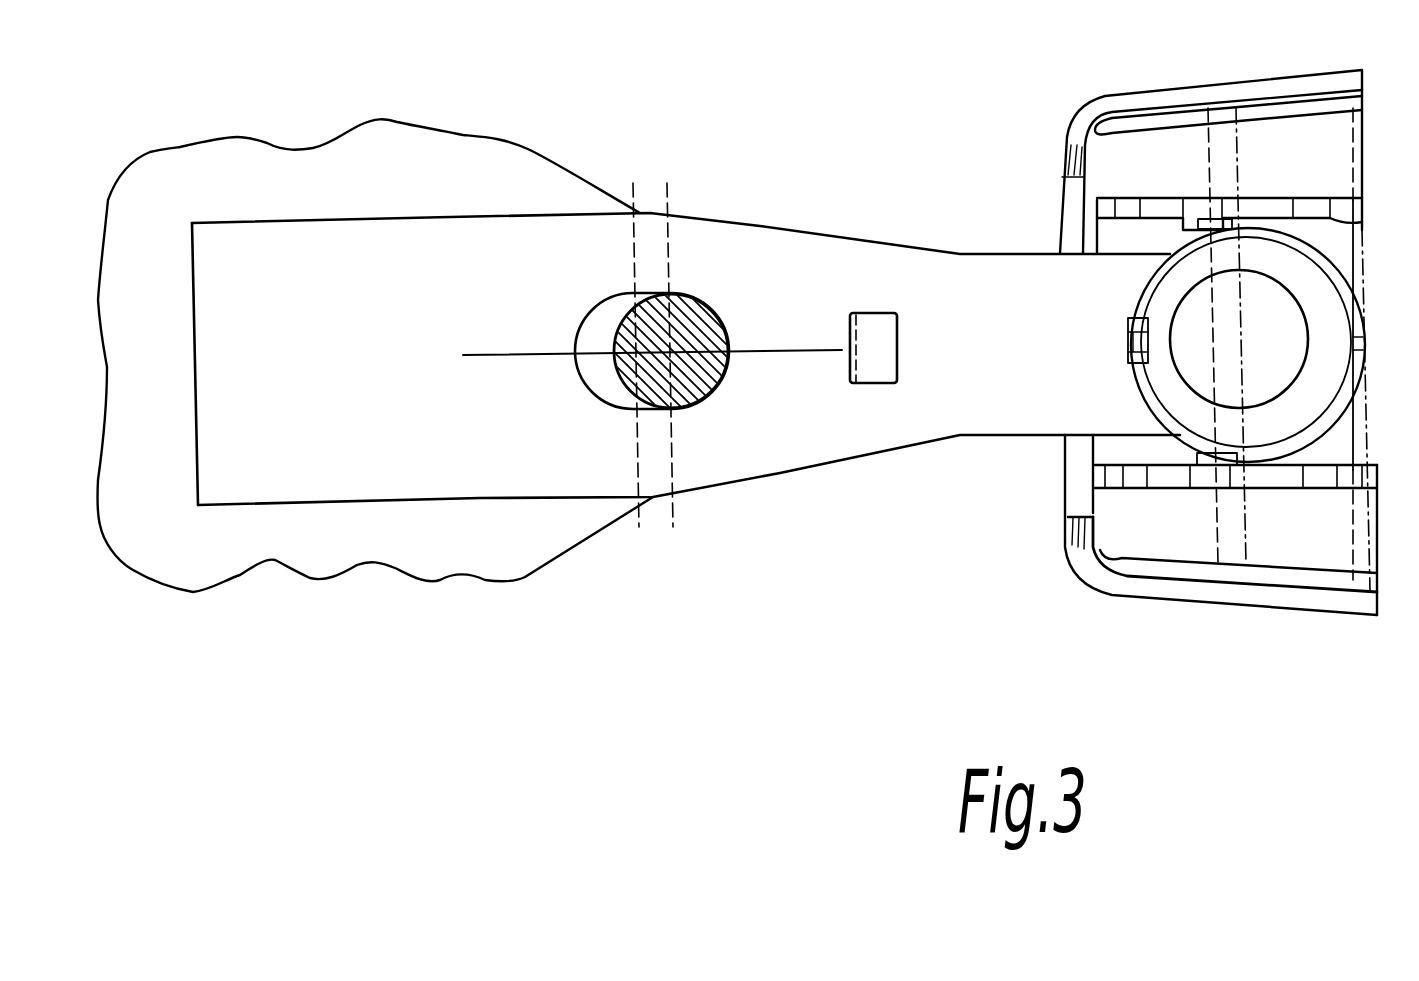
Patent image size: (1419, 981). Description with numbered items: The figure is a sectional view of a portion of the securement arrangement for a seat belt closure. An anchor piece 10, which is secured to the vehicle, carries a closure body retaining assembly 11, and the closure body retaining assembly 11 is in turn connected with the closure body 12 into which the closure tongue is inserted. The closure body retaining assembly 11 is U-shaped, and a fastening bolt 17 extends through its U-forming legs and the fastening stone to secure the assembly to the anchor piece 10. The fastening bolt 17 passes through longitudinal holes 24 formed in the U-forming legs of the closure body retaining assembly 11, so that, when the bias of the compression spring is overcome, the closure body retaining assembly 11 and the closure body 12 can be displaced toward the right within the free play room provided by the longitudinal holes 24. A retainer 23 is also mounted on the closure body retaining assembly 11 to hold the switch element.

The anchor piece 10 is at (193, 539).
The closure body retaining assembly 11 is at (323, 273).
The closure body 12 is at (1214, 563).
The fastening bolt 17 is at (663, 337).
The retainer 23 is at (870, 347).
The longitudinal holes 24 is at (598, 320).